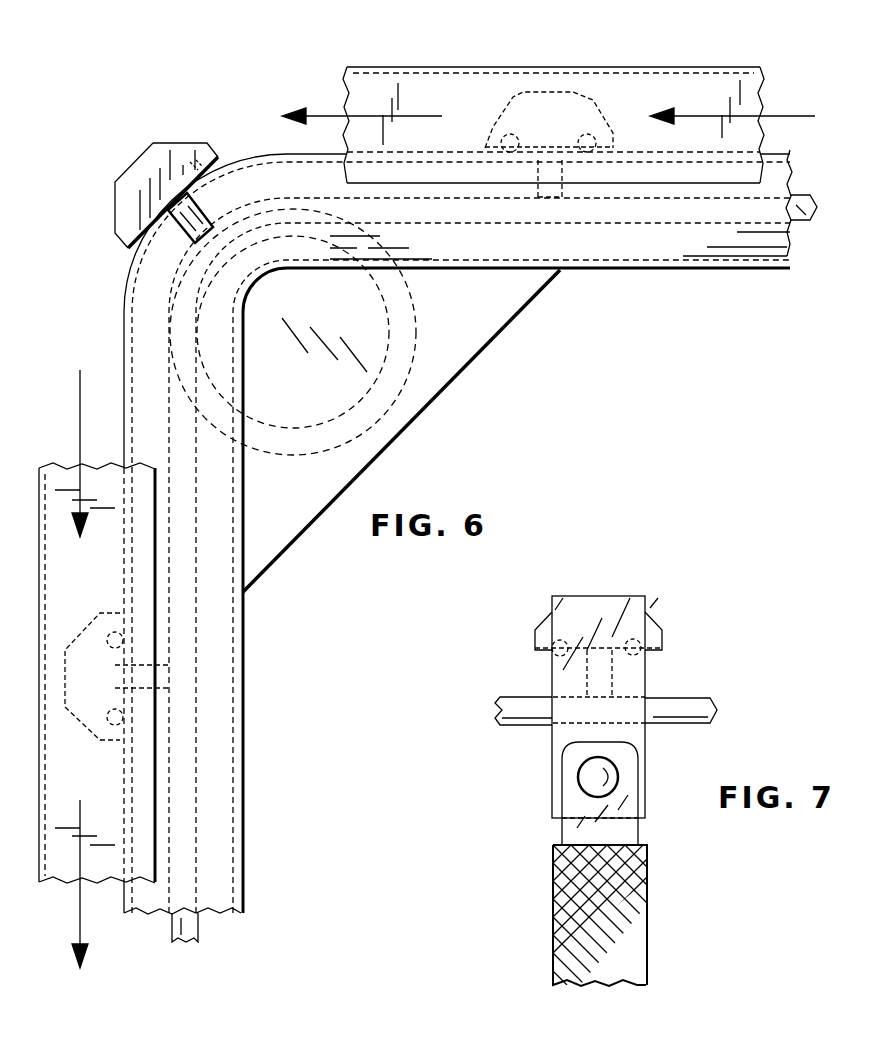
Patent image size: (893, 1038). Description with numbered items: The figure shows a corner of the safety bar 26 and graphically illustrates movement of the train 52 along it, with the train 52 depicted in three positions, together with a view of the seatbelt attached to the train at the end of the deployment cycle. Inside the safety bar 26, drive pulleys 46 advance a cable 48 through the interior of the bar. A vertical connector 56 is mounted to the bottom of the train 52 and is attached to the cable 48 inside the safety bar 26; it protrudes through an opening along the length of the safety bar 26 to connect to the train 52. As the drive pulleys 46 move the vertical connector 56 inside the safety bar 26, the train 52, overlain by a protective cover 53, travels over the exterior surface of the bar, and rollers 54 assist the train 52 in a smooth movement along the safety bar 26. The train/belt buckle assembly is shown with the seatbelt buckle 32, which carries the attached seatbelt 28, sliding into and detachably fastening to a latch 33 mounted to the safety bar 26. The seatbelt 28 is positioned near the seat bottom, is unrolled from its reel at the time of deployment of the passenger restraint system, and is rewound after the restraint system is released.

In FIG. 6, the safety bar 26 is at (765, 270).
In FIG. 7, the seatbelt 28 is at (625, 967).
In FIG. 7, the seatbelt buckle 32 is at (572, 793).
In FIG. 7, the latch 33 is at (568, 733).
In FIG. 6, the drive pulleys 46 is at (383, 340).
In FIG. 6, the cable 48 is at (817, 220).
In FIG. 7, the cable 48 is at (513, 707).
In FIG. 6, the train 52 is at (150, 193).
In FIG. 7, the train 52 is at (660, 627).
In FIG. 6, the protective cover 53 is at (680, 83).
In FIG. 6, the rollers 54 is at (128, 248).
In FIG. 7, the rollers 54 is at (552, 648).
In FIG. 6, the vertical connector 56 is at (177, 213).
In FIG. 7, the vertical connector 56 is at (598, 673).